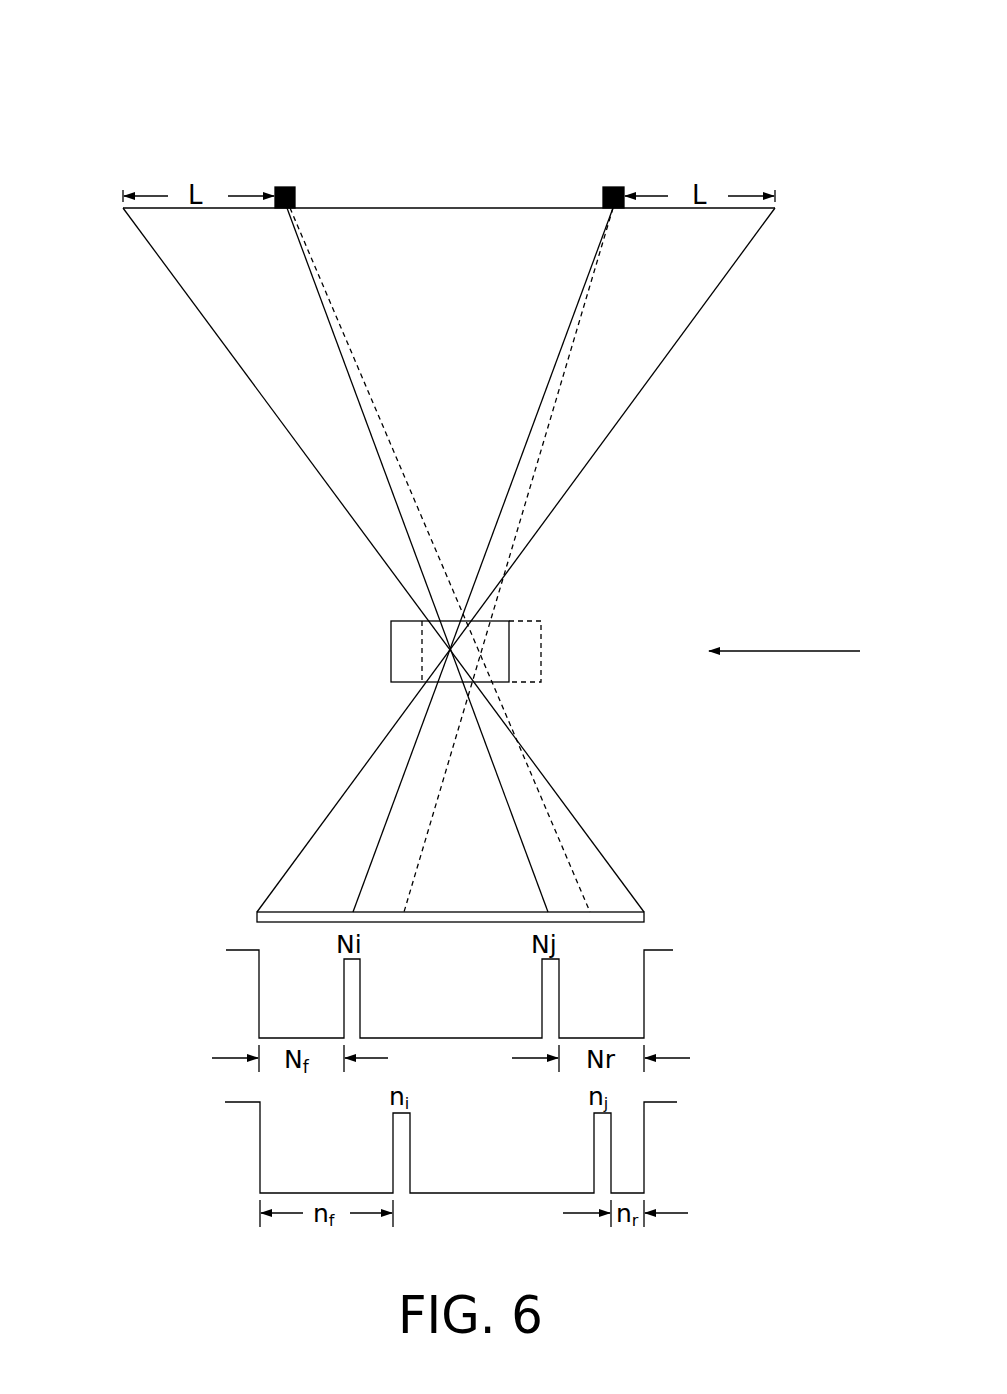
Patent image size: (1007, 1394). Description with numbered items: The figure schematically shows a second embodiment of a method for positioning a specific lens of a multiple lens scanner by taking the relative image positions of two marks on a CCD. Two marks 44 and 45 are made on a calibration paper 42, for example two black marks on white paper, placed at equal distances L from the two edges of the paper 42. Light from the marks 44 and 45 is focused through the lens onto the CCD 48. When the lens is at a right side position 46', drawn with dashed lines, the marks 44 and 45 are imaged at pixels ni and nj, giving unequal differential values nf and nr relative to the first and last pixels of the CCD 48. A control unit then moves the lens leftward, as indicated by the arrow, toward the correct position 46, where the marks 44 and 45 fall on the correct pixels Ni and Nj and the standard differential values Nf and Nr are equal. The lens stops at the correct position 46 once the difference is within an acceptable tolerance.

The calibration paper 42 is at (468, 208).
The first mark 44 is at (288, 187).
The second mark 45 is at (613, 187).
The correct position of the lens 46 is at (308, 613).
The right side position of the lens 46' is at (615, 609).
The CCD 48 is at (633, 917).